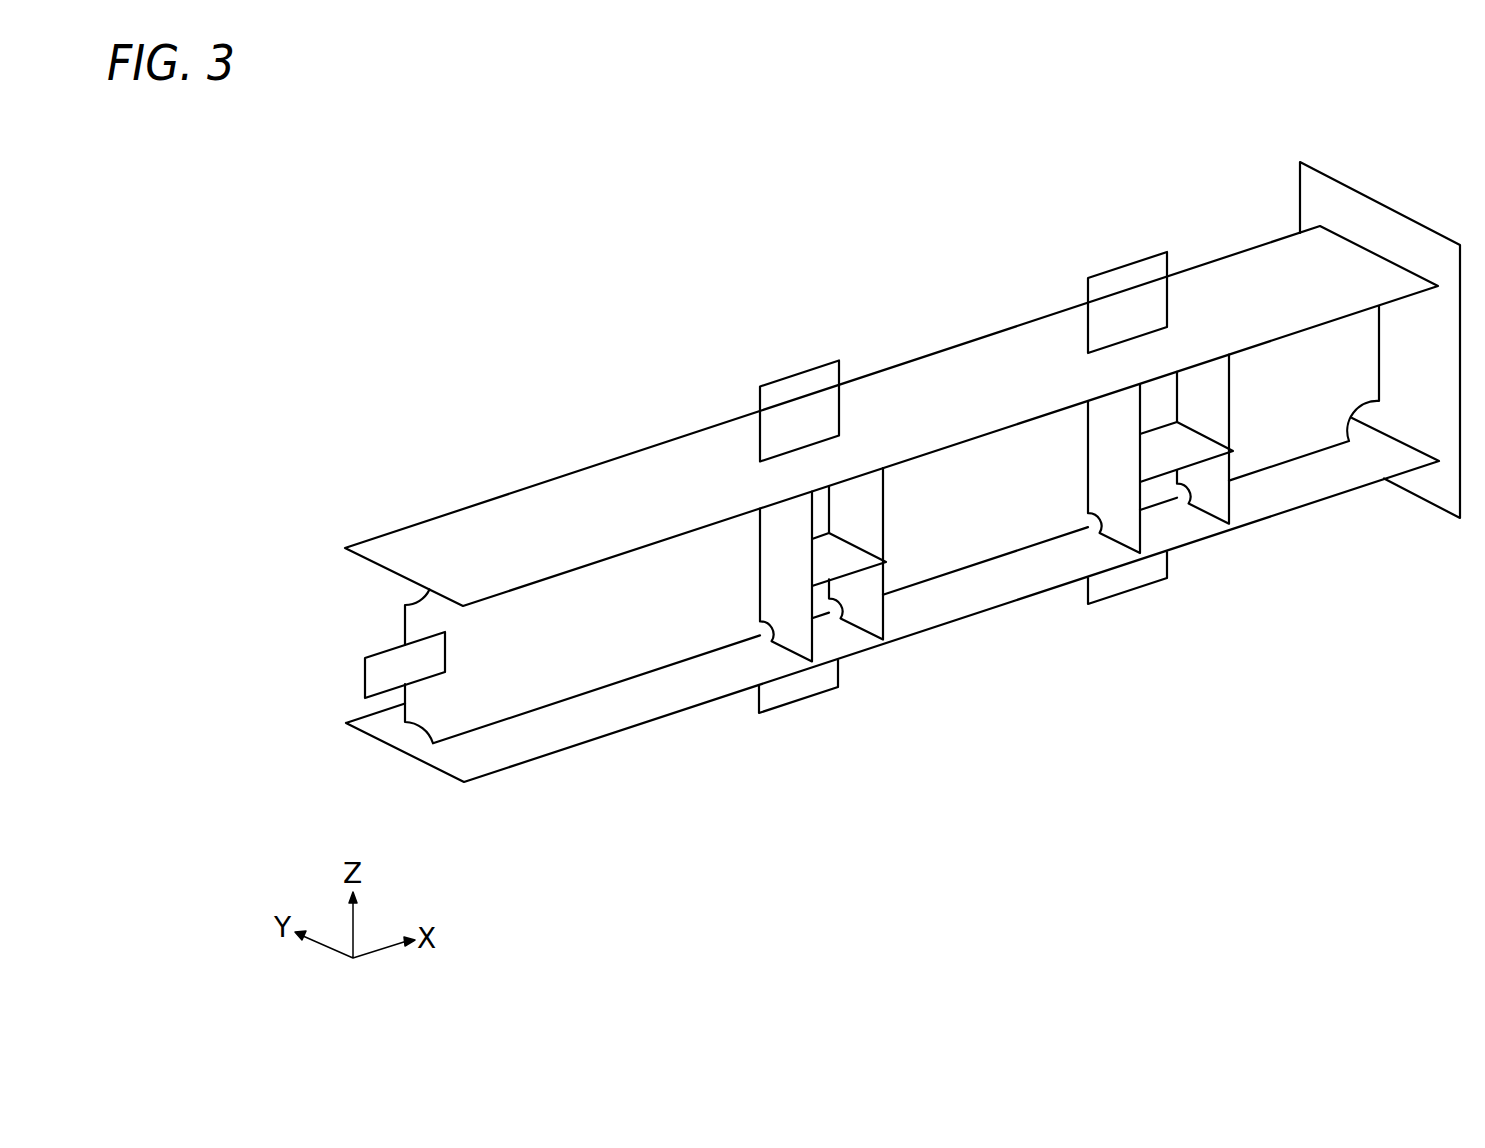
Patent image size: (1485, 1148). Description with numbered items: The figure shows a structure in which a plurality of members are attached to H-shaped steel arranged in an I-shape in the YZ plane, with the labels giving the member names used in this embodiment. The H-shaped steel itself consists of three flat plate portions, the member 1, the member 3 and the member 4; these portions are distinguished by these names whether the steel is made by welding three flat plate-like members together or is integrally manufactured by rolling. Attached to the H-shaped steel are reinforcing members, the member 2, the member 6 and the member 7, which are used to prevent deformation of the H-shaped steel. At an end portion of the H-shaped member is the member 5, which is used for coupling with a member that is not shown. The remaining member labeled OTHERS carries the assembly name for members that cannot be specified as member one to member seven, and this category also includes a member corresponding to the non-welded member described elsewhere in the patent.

The member 1 is at (428, 617).
The member 2 is at (798, 400).
The member 3 is at (980, 382).
The member 4 is at (998, 590).
The member 5 is at (1352, 212).
The member 6 is at (862, 605).
The member 7 is at (1163, 450).
The others OTHERS is at (383, 670).